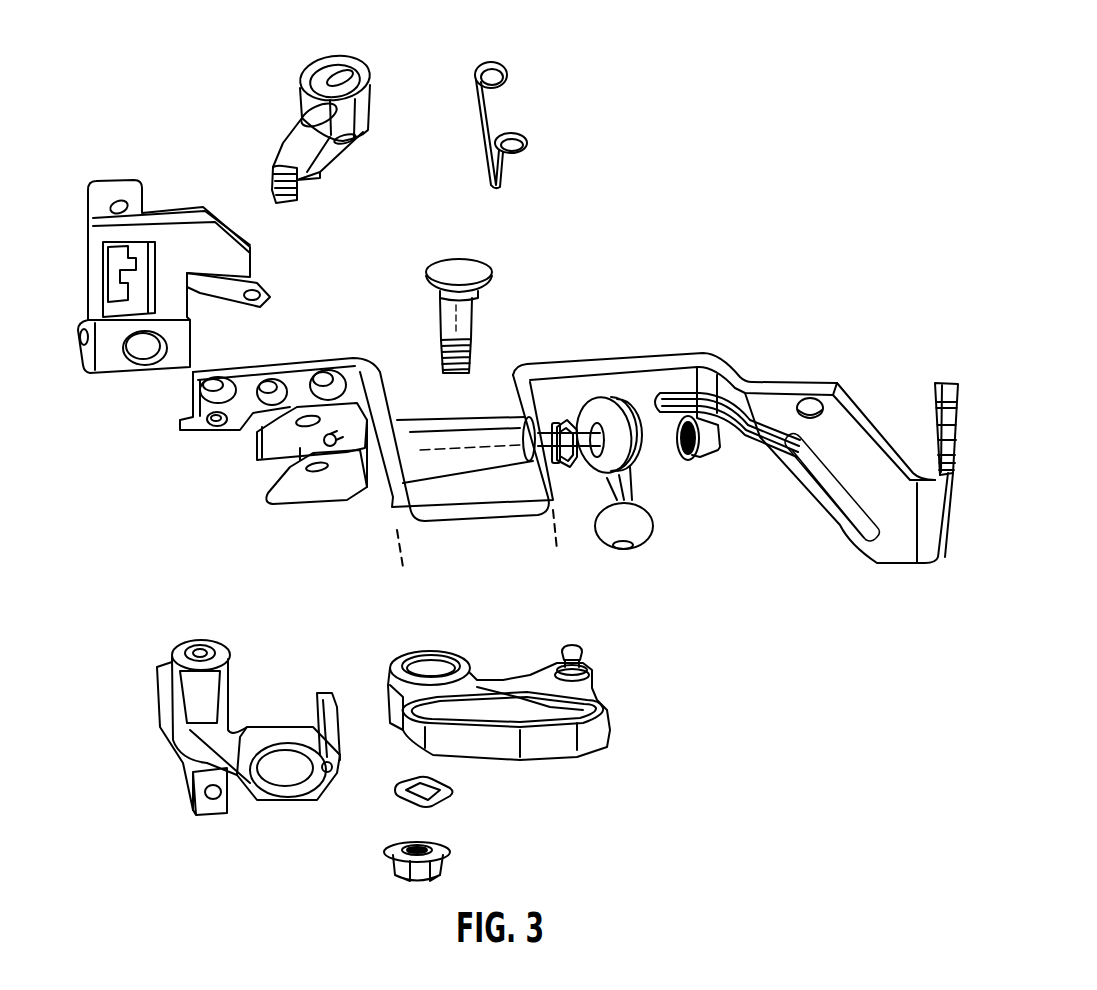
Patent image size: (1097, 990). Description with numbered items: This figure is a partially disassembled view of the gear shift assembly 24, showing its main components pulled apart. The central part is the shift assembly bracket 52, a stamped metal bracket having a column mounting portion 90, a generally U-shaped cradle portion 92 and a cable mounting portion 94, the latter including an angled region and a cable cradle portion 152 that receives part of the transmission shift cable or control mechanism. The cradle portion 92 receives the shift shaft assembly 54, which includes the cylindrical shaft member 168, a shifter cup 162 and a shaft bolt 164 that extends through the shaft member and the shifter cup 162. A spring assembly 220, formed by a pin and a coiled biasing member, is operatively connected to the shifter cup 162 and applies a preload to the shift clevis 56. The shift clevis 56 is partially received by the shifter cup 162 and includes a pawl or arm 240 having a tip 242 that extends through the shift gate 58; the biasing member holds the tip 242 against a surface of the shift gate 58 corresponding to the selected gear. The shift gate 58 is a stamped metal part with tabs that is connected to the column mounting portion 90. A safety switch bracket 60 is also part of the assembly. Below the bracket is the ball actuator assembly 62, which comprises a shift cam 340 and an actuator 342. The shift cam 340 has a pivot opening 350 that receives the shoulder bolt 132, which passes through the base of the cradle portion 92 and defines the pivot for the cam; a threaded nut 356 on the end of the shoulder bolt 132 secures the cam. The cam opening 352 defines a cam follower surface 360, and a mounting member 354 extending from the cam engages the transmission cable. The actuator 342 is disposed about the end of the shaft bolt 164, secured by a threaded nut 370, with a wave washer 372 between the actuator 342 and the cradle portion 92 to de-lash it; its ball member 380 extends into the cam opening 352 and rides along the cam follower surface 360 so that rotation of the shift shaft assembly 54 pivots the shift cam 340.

The latch assembly 24 is at (710, 104).
The shift assembly bracket 52 is at (750, 346).
The shift shaft assembly 54 is at (353, 518).
The shift clevis 56 is at (366, 45).
The shift gate 58 is at (84, 276).
The safety switch bracket 60 is at (210, 820).
The ball actuator assembly 62 is at (710, 684).
The column mounting portion 90 is at (372, 337).
The cradle portion 92 is at (558, 565).
The cable mounting portion 94 is at (948, 587).
The shoulder bolt 132 is at (482, 240).
The cable cradle portion 152 is at (953, 386).
The shifter cup 162 is at (270, 474).
The shaft bolt 164 is at (563, 423).
The cylinder 168 is at (472, 412).
The spring assembly 220 is at (492, 128).
The arm 240 is at (342, 165).
The tip 242 is at (296, 188).
The shift cam 340 is at (592, 762).
The actuator 342 is at (643, 484).
The pivot opening 350 is at (433, 708).
The cam opening 352 is at (417, 663).
The mounting member 354 is at (583, 652).
The threaded nut 356 is at (386, 864).
The cam follower surface 360 is at (480, 712).
The threaded nut 370 is at (740, 427).
The wave washer 372 is at (565, 466).
The ball member 380 is at (652, 522).